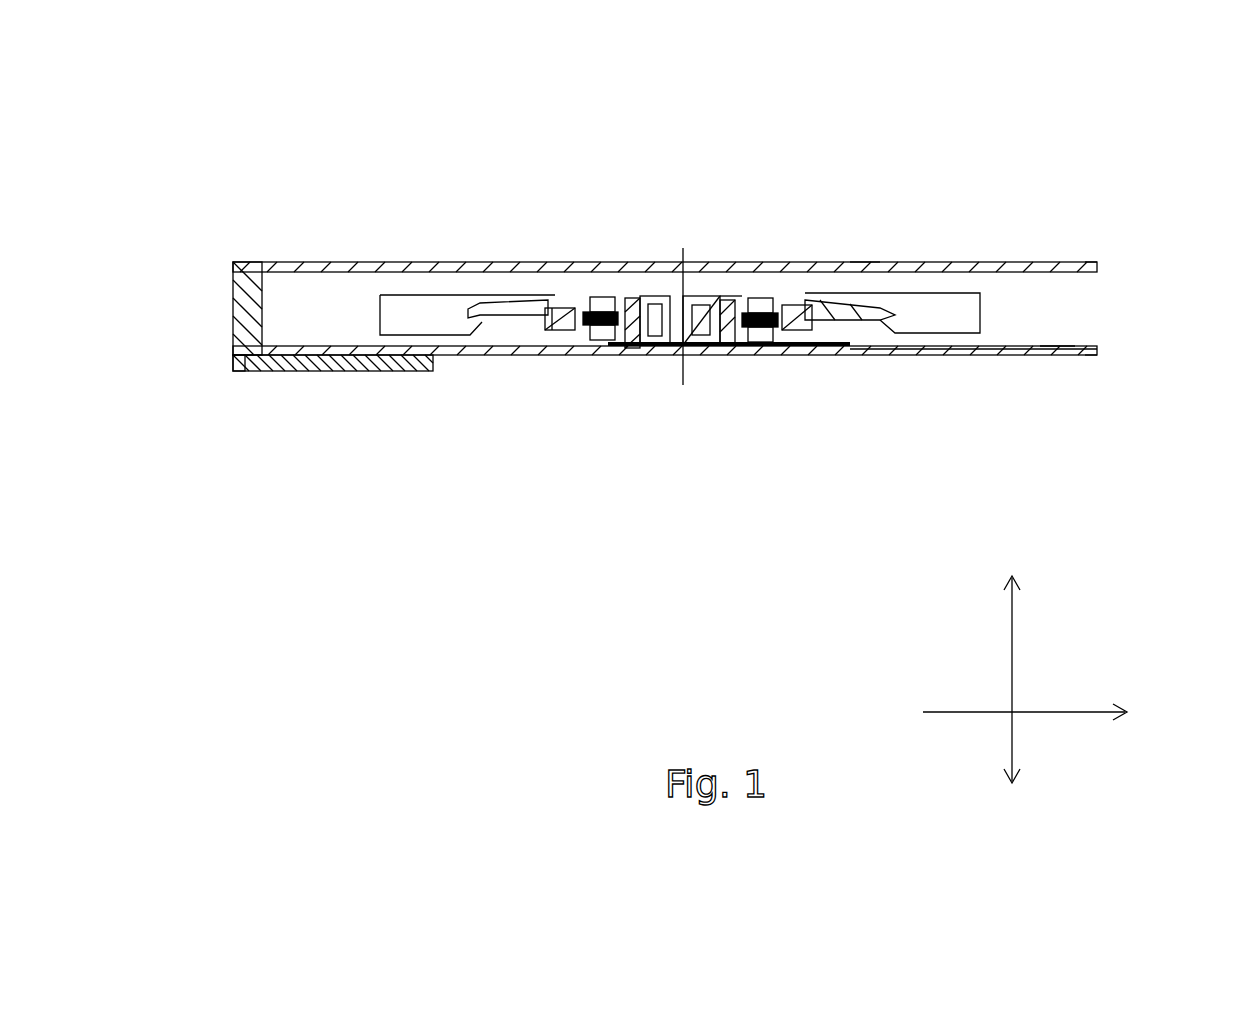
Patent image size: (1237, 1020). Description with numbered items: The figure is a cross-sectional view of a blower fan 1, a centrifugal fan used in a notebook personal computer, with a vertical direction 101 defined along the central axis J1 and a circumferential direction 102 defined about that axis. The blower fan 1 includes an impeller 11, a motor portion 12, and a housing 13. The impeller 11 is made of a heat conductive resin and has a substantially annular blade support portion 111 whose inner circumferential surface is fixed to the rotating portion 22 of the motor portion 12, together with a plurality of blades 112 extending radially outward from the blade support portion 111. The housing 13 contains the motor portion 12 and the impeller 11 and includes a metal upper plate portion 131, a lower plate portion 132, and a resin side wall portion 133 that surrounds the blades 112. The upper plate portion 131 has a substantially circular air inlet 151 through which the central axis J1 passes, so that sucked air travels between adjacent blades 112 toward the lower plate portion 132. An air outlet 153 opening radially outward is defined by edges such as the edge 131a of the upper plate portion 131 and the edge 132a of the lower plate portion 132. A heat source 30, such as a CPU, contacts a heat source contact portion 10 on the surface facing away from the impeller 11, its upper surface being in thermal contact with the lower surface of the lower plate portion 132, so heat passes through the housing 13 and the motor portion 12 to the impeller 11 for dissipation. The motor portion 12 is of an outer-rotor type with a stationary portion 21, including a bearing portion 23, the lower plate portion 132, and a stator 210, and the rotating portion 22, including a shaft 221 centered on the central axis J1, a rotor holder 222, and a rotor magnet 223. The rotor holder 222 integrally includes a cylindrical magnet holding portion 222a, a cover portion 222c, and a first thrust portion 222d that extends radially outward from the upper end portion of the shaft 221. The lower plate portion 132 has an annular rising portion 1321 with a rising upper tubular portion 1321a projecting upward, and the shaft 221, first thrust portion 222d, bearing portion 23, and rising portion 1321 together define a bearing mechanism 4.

The blower fan 1 is at (283, 125).
The heat source contact portion 10 is at (238, 372).
The impeller 11 is at (475, 454).
The blade support portion 111 is at (490, 322).
The blades 112 is at (943, 320).
The motor portion 12 is at (865, 134).
The housing 13 is at (292, 188).
The upper plate portion 131 is at (344, 262).
The edge of the upper plate portion 131a is at (1098, 262).
The lower plate portion 132 is at (468, 357).
The edge of the lower plate portion 132a is at (1098, 355).
The rising portion 1321 is at (700, 350).
The rising upper tubular portion 1321a is at (738, 356).
The side wall portion 133 is at (240, 266).
The air inlet 151 is at (867, 258).
The air outlet 153 is at (1120, 411).
The stationary portion 21 is at (880, 511).
The stator 210 is at (785, 348).
The rotating portion 22 is at (760, 287).
The shaft 221 is at (636, 355).
The rotor holder 222 is at (712, 101).
The cylindrical magnet holding portion 222a is at (530, 300).
The cover portion 222c is at (588, 298).
The first thrust portion 222d is at (647, 297).
The rotor magnet 223 is at (548, 300).
The bearing portion 23 is at (722, 348).
The heat source 30 is at (270, 372).
The bearing mechanism 4 is at (731, 291).
The central axis J1 is at (706, 289).
The vertical direction 101 is at (1011, 658).
The circumferential direction 102 is at (1027, 690).